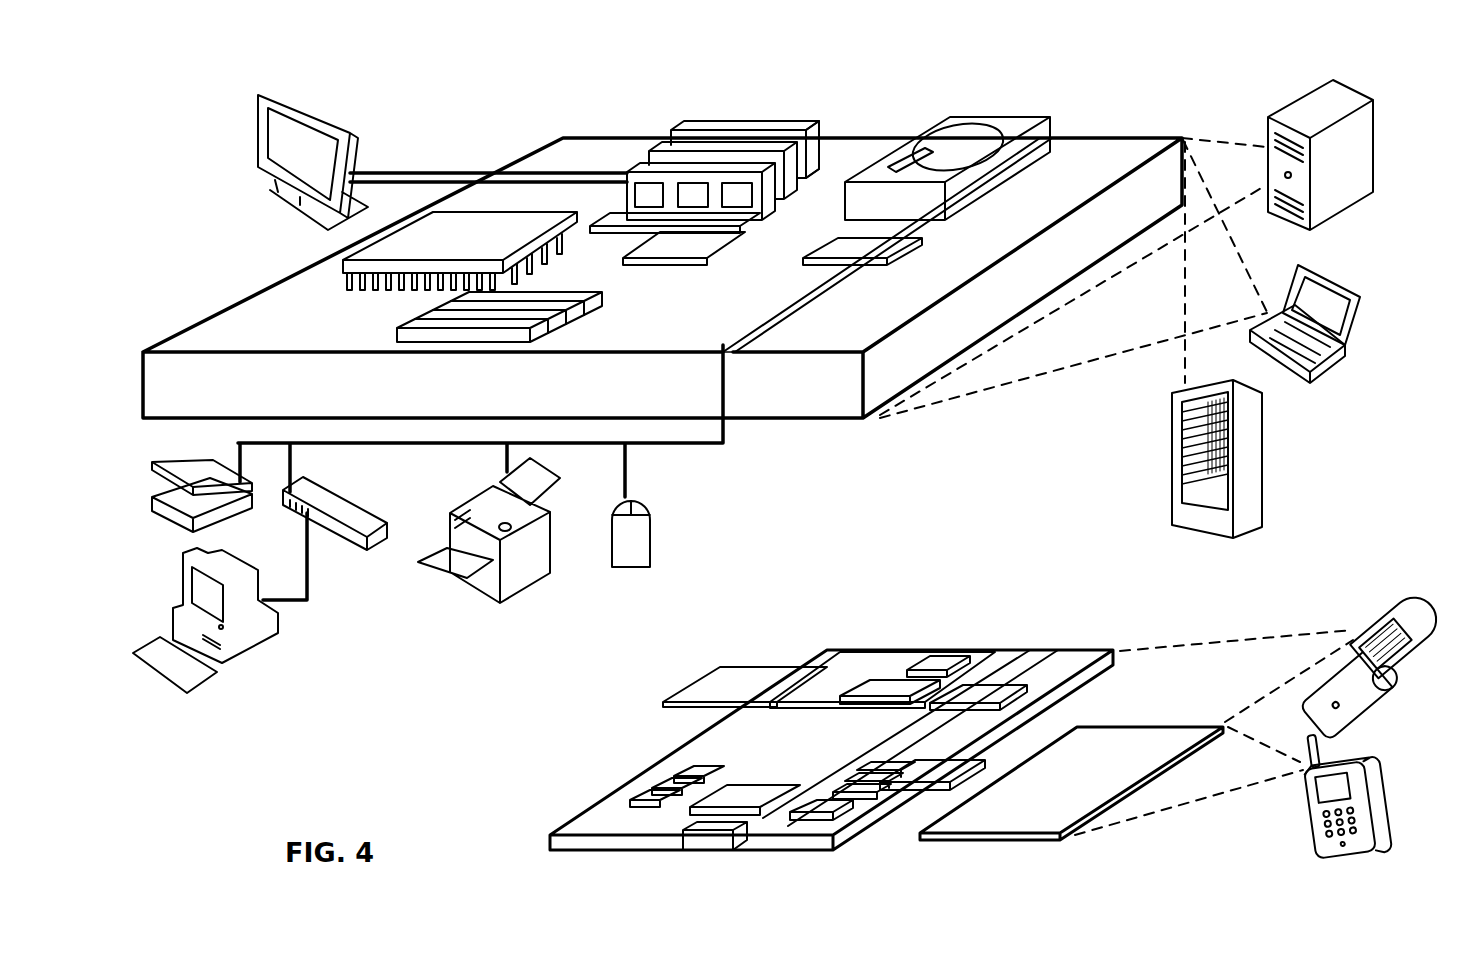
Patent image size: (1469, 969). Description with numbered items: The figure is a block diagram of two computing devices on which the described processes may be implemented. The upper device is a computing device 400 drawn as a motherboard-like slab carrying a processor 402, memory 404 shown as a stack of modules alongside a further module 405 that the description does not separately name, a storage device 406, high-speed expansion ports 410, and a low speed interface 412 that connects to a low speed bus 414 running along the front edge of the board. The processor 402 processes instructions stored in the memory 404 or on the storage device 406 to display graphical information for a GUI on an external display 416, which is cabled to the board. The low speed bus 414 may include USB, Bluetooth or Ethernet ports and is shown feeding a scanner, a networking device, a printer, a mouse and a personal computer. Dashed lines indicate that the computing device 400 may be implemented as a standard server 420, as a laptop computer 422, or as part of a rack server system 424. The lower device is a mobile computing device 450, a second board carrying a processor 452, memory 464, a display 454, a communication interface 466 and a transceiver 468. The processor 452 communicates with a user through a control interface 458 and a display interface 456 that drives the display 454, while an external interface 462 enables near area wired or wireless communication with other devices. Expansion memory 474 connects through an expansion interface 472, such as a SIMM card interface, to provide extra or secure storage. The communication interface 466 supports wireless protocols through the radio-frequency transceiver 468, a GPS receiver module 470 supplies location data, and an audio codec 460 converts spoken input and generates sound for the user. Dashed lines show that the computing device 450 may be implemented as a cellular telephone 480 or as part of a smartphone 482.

The computing device 400 is at (522, 110).
The processor 402 is at (345, 270).
The memory 404 is at (703, 128).
The memory module 405 is at (668, 135).
The storage device 406 is at (947, 117).
The high-speed expansion ports 410 is at (397, 330).
The low speed interface 412 is at (848, 260).
The low speed bus 414 is at (735, 355).
The display 416 is at (262, 93).
The standard server 420 is at (1283, 105).
The laptop computer 422 is at (1313, 362).
The rack server system 424 is at (1172, 493).
The computing device 450 is at (634, 720).
The processor 452 is at (758, 792).
The display 454 is at (1037, 812).
The display interface 456 is at (818, 810).
The control interface 458 is at (873, 795).
The audio codec 460 is at (918, 790).
The external interface 462 is at (706, 840).
The memory 464 is at (663, 785).
The communication interface 466 is at (885, 687).
The transceiver 468 is at (987, 690).
The GPS receiver module 470 is at (947, 652).
The expansion interface 472 is at (807, 667).
The expansion memory 474 is at (717, 670).
The cellular telephone 480 is at (1385, 600).
The smartphone 482 is at (1317, 803).